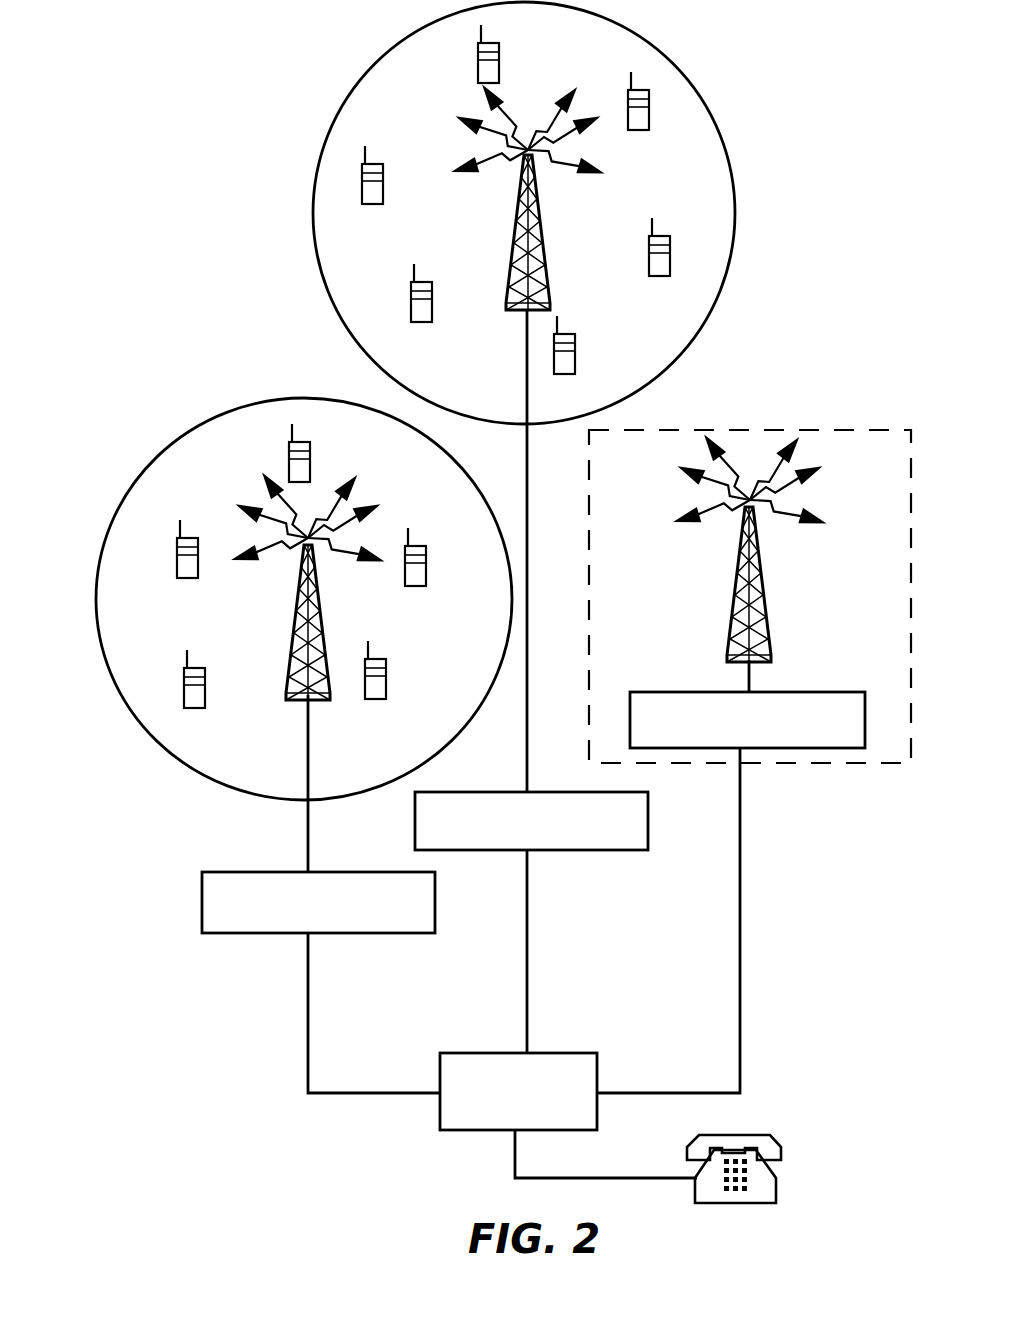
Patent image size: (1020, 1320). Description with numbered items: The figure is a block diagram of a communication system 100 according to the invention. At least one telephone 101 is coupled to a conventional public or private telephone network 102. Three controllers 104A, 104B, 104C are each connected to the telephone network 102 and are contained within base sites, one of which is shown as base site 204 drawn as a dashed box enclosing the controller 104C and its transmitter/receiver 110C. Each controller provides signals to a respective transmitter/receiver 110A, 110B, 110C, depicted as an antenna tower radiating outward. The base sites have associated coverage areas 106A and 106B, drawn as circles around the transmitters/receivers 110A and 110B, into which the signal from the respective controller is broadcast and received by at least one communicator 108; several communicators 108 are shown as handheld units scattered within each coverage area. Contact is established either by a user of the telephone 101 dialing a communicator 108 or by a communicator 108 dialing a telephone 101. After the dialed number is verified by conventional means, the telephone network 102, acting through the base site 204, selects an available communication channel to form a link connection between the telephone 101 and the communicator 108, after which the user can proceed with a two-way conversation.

The communication system 100 is at (232, 94).
The telephone 101 is at (752, 1134).
The telephone network 102 is at (437, 1105).
The controller 104A is at (202, 885).
The controller 104B is at (648, 820).
The controller 104C is at (688, 688).
The coverage area 106A is at (99, 648).
The coverage area 106B is at (313, 242).
The communicator 108 is at (382, 184).
The transmitter/receiver 110A is at (297, 590).
The transmitter/receiver 110B is at (540, 250).
The transmitter/receiver 110C is at (760, 540).
The base site 204 is at (773, 430).